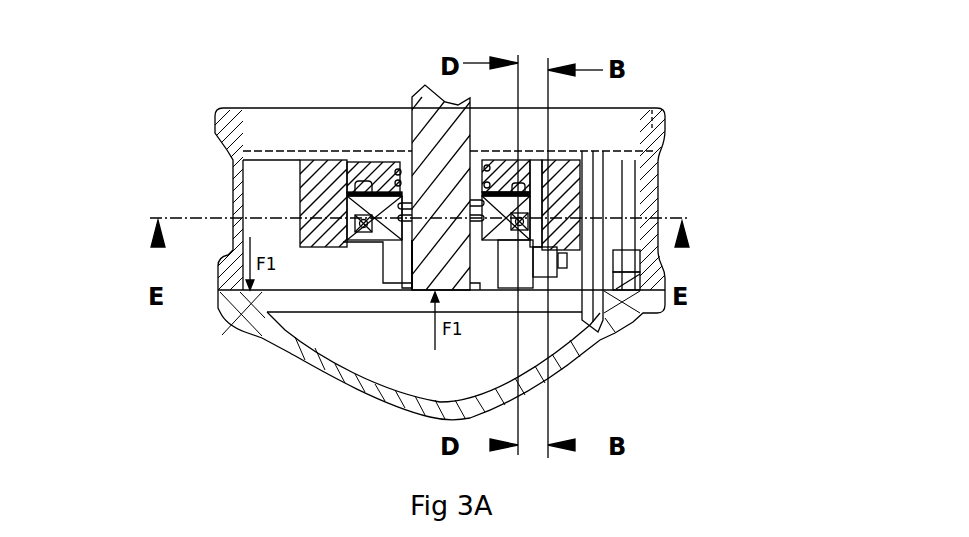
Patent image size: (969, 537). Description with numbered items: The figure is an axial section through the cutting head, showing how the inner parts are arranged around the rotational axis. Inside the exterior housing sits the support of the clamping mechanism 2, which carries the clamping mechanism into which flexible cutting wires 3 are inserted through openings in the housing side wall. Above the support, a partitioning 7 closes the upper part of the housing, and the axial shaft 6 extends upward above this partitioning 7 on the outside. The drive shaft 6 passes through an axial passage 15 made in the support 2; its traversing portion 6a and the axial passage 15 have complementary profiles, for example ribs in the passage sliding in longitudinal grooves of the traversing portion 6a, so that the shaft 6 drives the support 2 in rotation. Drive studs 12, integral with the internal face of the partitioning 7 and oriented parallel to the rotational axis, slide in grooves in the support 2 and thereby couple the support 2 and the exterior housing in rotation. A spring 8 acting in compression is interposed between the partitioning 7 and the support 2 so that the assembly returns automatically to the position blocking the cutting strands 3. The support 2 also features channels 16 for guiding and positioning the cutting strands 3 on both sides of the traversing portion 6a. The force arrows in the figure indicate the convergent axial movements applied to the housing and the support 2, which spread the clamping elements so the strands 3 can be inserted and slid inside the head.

The support of the clamping mechanism 2 is at (397, 247).
The cutting wire 3 is at (352, 218).
The axial shaft 6 is at (436, 112).
The traversing portion of the shaft 6a is at (412, 248).
The partitioning 7 is at (397, 163).
The spring 8 is at (483, 185).
The drive studs 12 is at (315, 182).
The axial passage 15 is at (468, 252).
The channel 16 is at (353, 224).